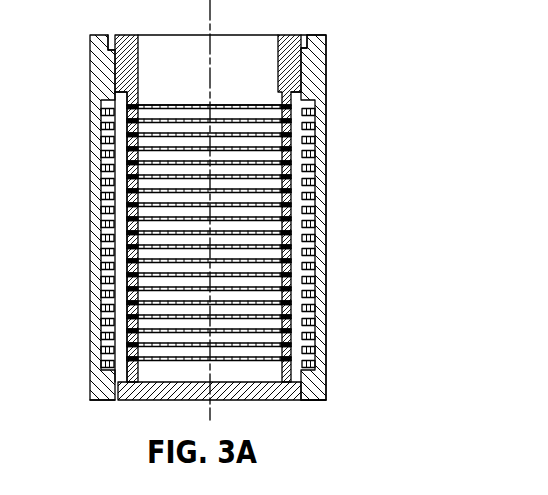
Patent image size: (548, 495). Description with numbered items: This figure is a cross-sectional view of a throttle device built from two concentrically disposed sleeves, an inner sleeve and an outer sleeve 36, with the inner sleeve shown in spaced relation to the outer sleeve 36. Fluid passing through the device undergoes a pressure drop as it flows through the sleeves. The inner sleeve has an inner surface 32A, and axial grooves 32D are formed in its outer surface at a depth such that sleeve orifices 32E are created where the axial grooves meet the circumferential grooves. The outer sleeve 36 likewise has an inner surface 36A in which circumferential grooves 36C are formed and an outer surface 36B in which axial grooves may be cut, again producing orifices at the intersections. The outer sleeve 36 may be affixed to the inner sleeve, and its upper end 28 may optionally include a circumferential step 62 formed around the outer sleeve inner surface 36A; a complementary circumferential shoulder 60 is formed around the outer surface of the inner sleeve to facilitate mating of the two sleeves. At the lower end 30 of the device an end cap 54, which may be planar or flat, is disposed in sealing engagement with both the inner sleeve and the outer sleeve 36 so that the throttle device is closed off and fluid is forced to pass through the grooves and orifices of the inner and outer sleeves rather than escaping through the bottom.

The upper end 28 is at (327, 127).
The lower end 30 is at (328, 396).
The inner surface 32A is at (278, 57).
The axial grooves 32D is at (122, 221).
The sleeve orifices 32E is at (218, 110).
The outer sleeve 36 is at (90, 42).
The inner surface 36A is at (104, 88).
The outer surface 36B is at (101, 126).
The circumferential grooves 36C is at (103, 176).
The end cap 54 is at (272, 401).
The circumferential shoulder 60 is at (302, 36).
The circumferential step 62 is at (292, 92).